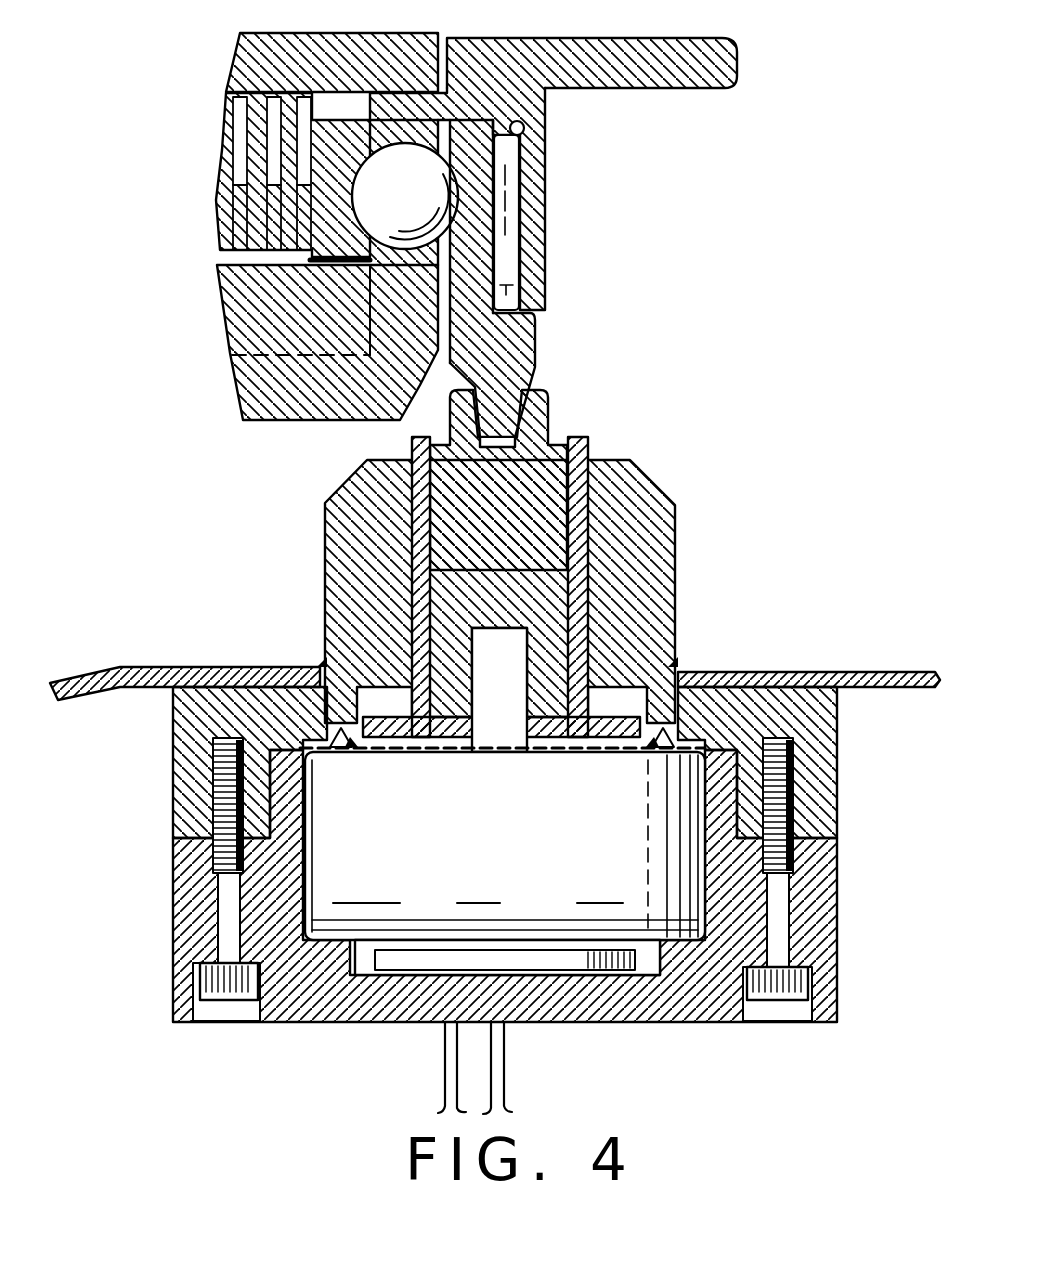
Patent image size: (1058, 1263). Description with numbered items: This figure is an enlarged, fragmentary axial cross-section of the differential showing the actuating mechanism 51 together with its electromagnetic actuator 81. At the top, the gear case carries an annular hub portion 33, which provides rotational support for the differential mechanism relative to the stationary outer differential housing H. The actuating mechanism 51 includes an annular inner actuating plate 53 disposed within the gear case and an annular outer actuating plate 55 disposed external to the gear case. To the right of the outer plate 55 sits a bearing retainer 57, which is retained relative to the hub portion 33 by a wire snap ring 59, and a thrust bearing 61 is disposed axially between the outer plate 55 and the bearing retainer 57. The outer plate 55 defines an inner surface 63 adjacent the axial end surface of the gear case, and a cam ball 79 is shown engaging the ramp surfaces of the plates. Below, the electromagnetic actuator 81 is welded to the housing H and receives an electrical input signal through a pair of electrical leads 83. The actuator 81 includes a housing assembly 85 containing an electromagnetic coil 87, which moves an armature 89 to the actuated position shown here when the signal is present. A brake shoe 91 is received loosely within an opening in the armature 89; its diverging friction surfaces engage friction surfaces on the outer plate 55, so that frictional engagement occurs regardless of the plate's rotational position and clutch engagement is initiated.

The annular hub portion 33 is at (687, 73).
The actuating mechanism 51 is at (494, 240).
The inner actuating plate 53 is at (330, 245).
The outer actuating plate 55 is at (513, 344).
The bearing retainer 57 is at (493, 185).
The wire snap ring 59 is at (516, 121).
The thrust bearing 61 is at (515, 240).
The inner surface 63 is at (442, 345).
The cam ball 79 is at (402, 237).
The electromagnetic actuator 81 is at (450, 665).
The electrical leads 83 is at (438, 1050).
The housing assembly 85 is at (551, 854).
The electromagnetic coil 87 is at (505, 846).
The armature 89 is at (596, 620).
The brake shoe 91 is at (498, 480).
The outer differential housing H is at (203, 673).